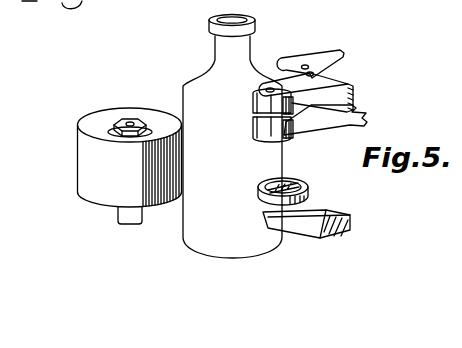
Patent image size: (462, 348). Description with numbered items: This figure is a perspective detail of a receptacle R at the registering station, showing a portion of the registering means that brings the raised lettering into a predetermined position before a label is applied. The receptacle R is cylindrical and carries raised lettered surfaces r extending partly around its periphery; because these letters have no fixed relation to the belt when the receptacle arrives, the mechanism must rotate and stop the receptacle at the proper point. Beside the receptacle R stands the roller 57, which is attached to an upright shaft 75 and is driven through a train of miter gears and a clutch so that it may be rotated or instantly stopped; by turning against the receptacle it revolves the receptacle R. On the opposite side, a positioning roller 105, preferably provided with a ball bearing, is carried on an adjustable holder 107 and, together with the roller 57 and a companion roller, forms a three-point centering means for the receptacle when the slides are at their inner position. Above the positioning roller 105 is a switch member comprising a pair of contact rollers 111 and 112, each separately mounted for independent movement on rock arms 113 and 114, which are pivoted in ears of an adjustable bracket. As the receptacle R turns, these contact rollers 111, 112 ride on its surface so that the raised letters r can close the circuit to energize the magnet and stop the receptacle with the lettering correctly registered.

The roller 57 is at (130, 166).
The upright shaft 75 is at (133, 119).
The raised lettered surfaces r is at (203, 105).
The receptacle R is at (261, 158).
The contact roller 111 is at (270, 108).
The contact roller 112 is at (262, 133).
The rock arm 113 is at (339, 64).
The rock arm 114 is at (363, 117).
The positioning roller 105 is at (306, 192).
The adjustable holder 107 is at (322, 216).